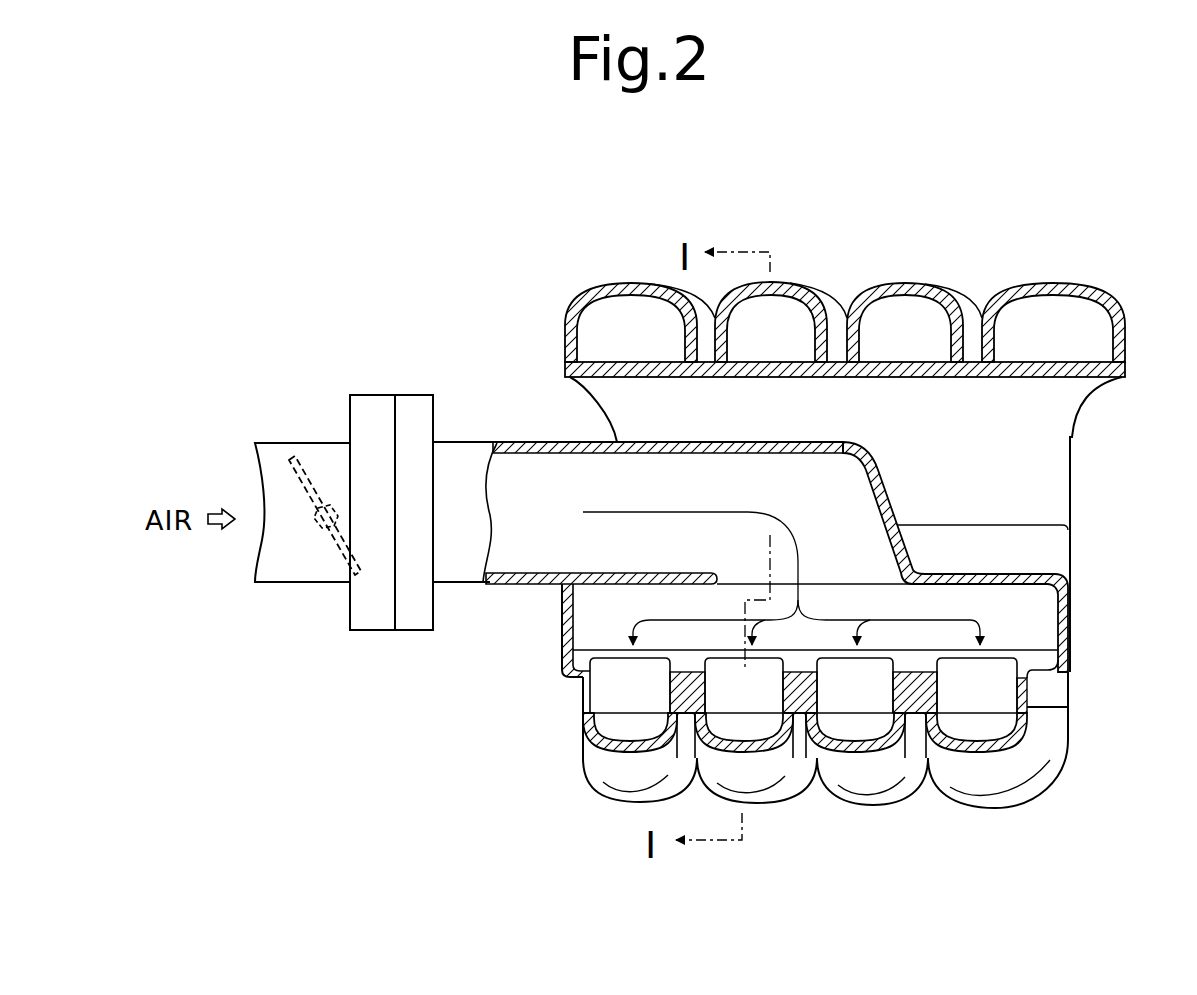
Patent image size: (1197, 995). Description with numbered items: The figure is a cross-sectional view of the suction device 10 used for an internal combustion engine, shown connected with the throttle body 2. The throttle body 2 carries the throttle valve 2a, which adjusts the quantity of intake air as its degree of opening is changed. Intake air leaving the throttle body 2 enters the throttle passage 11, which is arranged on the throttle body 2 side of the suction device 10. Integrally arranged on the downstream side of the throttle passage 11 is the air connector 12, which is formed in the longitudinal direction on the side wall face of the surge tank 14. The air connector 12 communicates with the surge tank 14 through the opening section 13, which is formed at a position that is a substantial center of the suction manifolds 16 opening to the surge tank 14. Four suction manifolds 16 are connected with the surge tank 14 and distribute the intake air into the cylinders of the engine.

The throttle body 2 is at (297, 420).
The throttle valve 2a is at (327, 537).
The suction device 10 is at (578, 272).
The throttle passage 11 is at (473, 443).
The air connector 12 is at (898, 488).
The opening section 13 is at (720, 577).
The surge tank 14 is at (1030, 626).
The suction manifolds 16 is at (678, 290).